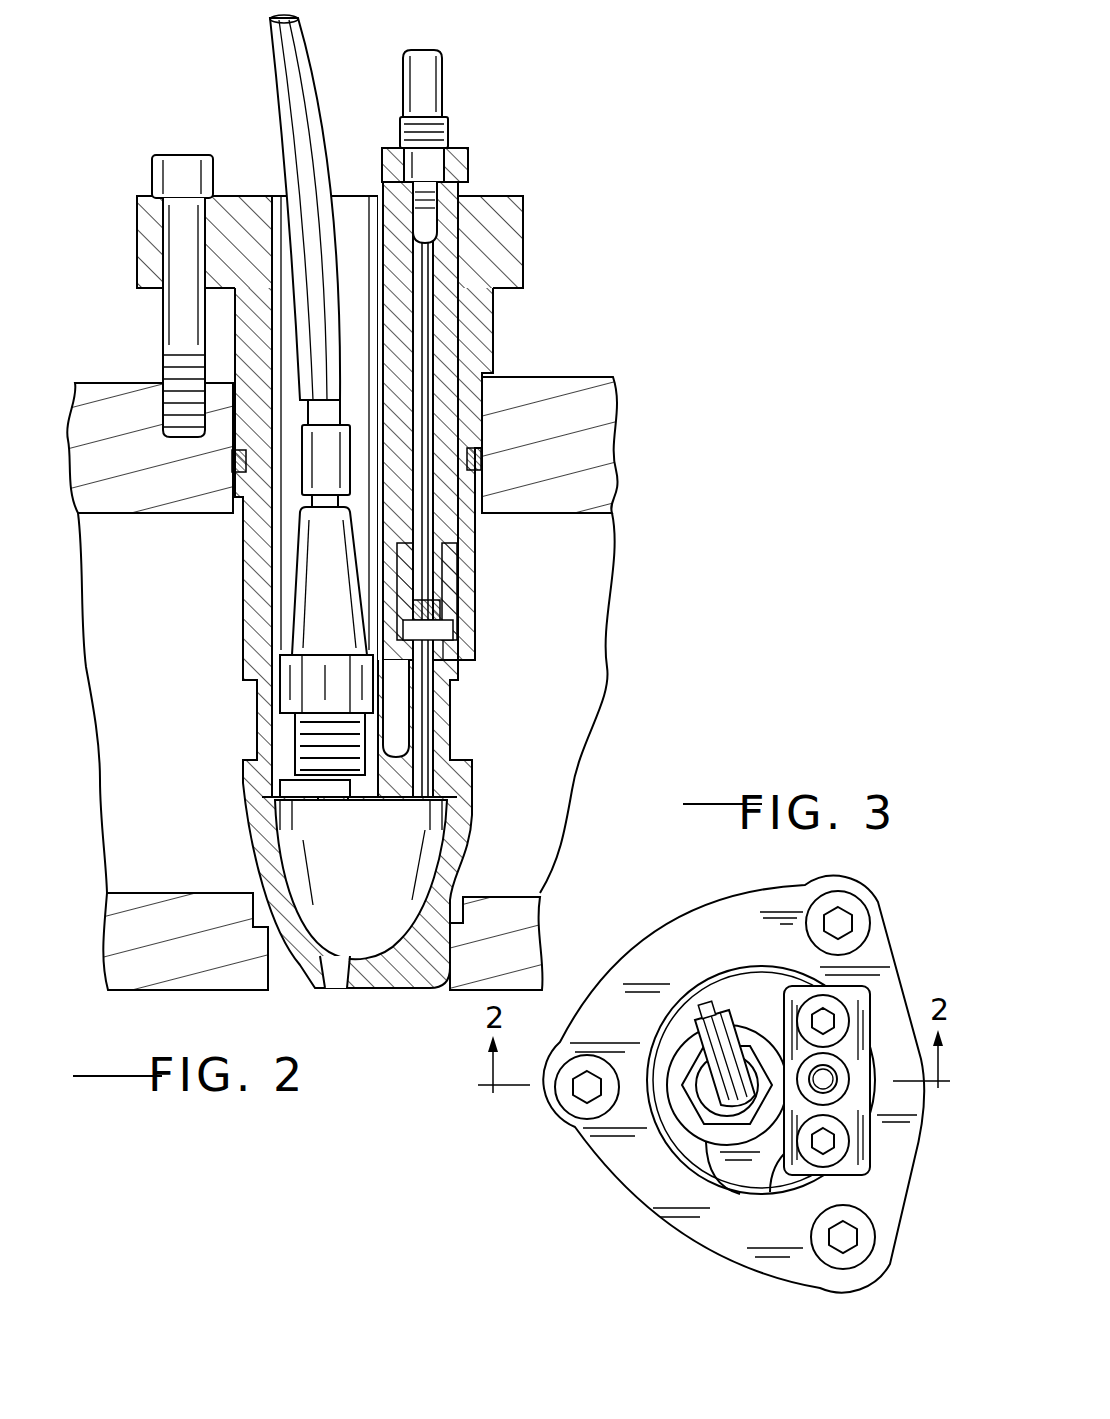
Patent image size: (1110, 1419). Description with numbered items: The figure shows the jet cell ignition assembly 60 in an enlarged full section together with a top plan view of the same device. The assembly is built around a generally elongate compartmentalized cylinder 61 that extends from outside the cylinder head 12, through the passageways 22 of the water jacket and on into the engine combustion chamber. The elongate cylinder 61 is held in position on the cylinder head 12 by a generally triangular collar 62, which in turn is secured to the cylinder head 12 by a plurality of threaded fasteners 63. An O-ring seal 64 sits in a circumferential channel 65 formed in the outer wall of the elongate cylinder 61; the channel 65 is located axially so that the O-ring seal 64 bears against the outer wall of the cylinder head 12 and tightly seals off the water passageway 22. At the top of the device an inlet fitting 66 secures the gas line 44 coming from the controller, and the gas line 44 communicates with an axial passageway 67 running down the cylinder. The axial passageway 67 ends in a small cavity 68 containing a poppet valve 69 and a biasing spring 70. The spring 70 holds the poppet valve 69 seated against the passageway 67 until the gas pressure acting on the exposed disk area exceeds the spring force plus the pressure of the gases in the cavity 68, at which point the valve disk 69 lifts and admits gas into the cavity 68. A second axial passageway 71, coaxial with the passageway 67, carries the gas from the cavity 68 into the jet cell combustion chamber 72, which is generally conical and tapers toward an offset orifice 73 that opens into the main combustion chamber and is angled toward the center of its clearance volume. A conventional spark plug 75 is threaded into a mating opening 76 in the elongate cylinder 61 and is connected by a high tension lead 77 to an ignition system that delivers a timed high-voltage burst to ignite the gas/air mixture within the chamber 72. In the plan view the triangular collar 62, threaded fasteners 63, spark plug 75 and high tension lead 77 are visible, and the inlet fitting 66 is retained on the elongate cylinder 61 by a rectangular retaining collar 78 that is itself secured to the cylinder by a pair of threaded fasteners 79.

In FIG. 2, the cylinder head 12 is at (572, 398).
In FIG. 2, the passageways of the water jacket 22 is at (148, 686).
In FIG. 2, the gas line 44 is at (443, 68).
In FIG. 2, the jet cell ignition assembly 60 is at (650, 240).
In FIG. 2, the elongate cylinder 61 is at (482, 345).
In FIG. 2, the triangular collar 62 is at (527, 233).
In FIG. 3, the triangular collar 62 is at (673, 950).
In FIG. 2, the threaded fasteners 63 is at (205, 178).
In FIG. 3, the threaded fasteners 63 is at (878, 925).
In FIG. 2, the O-ring seal 64 is at (483, 457).
In FIG. 2, the circumferential channel 65 is at (473, 495).
In FIG. 2, the inlet fitting 66 is at (452, 130).
In FIG. 3, the inlet fitting 66 is at (855, 1080).
In FIG. 2, the axial passageway 67 is at (432, 321).
In FIG. 2, the small cavity 68 is at (442, 610).
In FIG. 2, the poppet valve 69 is at (442, 593).
In FIG. 2, the biasing spring 70 is at (442, 633).
In FIG. 2, the axial passageway 71 is at (422, 725).
In FIG. 2, the jet cell combustion chamber 72 is at (376, 879).
In FIG. 2, the offset orifice 73 is at (318, 992).
In FIG. 2, the spark plug 75 is at (293, 610).
In FIG. 3, the spark plug 75 is at (710, 1160).
In FIG. 2, the mating opening 76 is at (291, 745).
In FIG. 2, the high tension lead 77 is at (322, 100).
In FIG. 3, the high tension lead 77 is at (735, 1005).
In FIG. 2, the rectangular retaining collar 78 is at (470, 162).
In FIG. 3, the rectangular retaining collar 78 is at (757, 1167).
In FIG. 3, the threaded fasteners 79 is at (862, 1000).